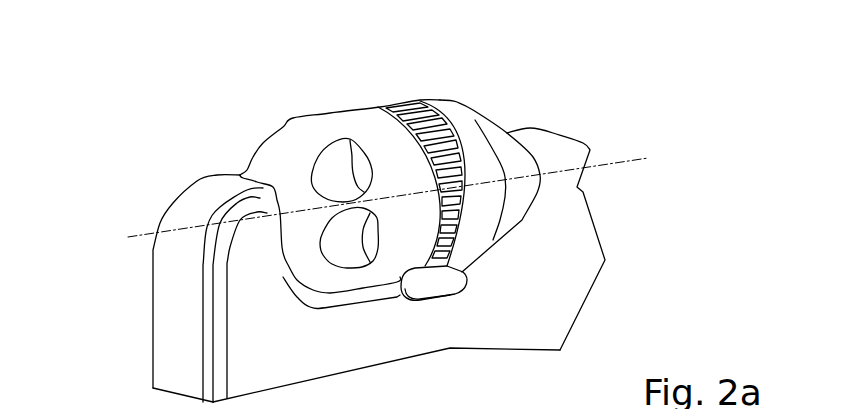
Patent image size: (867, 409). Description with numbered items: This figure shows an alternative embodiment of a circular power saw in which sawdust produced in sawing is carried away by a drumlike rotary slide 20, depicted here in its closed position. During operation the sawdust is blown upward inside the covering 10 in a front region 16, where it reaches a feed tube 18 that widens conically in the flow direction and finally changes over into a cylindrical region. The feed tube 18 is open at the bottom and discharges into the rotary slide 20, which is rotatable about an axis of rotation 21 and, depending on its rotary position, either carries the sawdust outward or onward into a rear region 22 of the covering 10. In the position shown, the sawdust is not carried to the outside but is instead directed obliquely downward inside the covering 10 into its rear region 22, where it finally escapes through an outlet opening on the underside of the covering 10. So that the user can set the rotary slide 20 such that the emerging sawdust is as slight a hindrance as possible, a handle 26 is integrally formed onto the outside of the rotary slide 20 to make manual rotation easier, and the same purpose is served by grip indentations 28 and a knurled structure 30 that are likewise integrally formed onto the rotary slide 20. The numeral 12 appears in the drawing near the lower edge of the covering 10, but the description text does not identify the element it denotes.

The covering 10 is at (232, 242).
The base 12 is at (386, 378).
The front region 16 is at (543, 308).
The feed tube 18 is at (477, 110).
The rotary slide 20 is at (368, 93).
The axis of rotation 21 is at (140, 235).
The rear region 22 is at (218, 320).
The handle 26 is at (428, 283).
The grip indentations 28 is at (328, 168).
The knurled structure 30 is at (449, 203).